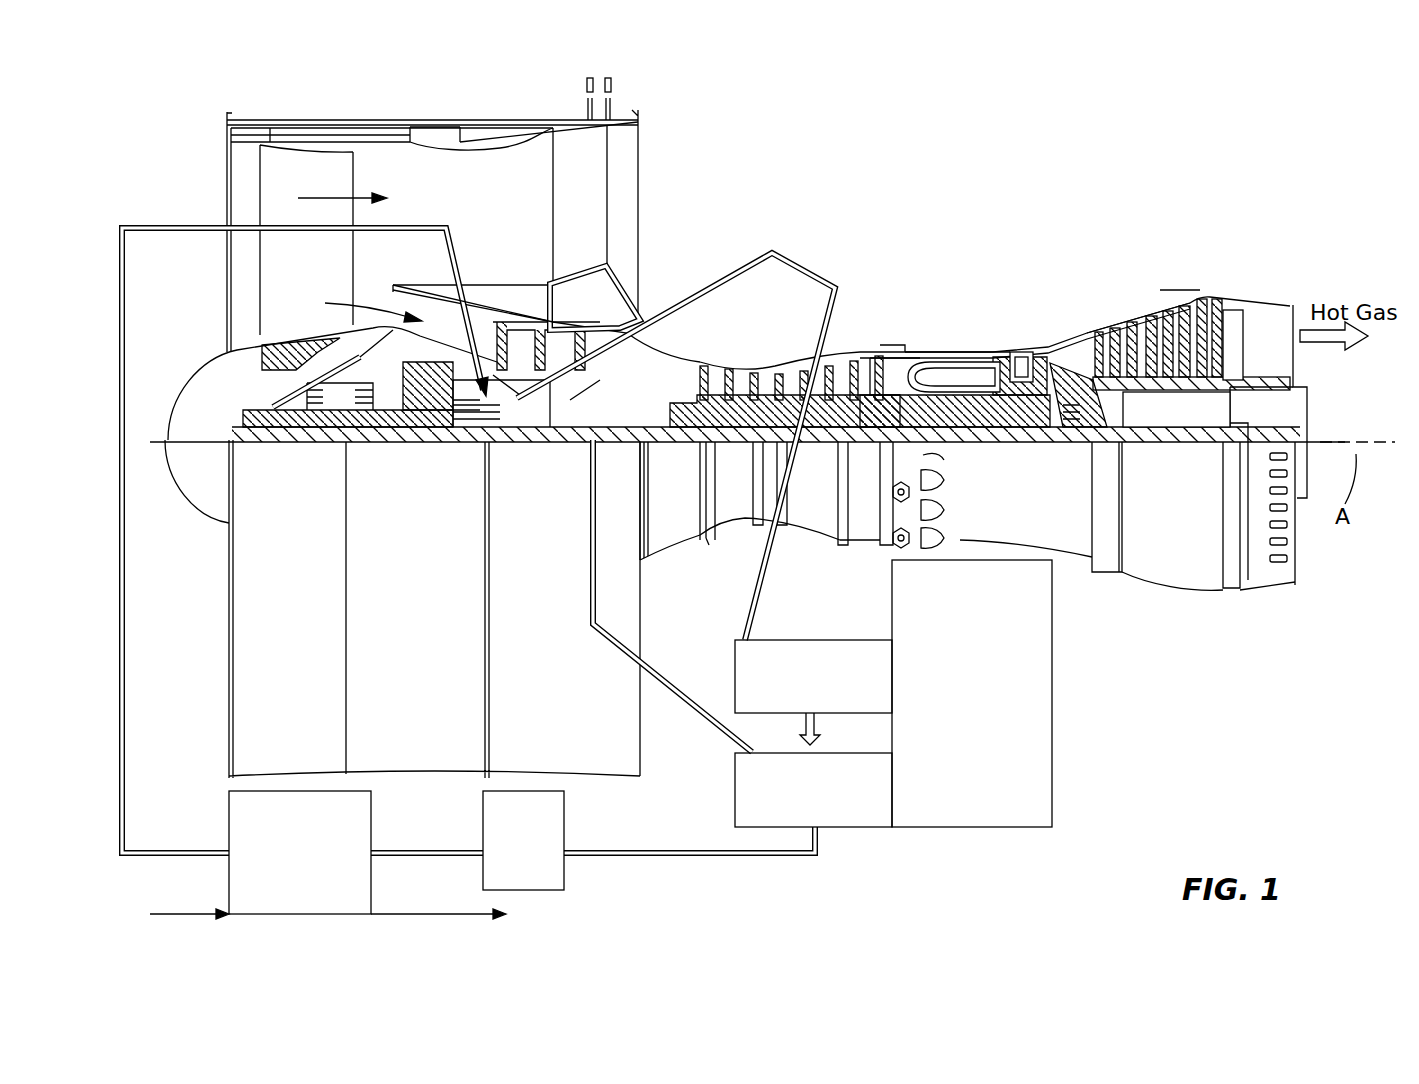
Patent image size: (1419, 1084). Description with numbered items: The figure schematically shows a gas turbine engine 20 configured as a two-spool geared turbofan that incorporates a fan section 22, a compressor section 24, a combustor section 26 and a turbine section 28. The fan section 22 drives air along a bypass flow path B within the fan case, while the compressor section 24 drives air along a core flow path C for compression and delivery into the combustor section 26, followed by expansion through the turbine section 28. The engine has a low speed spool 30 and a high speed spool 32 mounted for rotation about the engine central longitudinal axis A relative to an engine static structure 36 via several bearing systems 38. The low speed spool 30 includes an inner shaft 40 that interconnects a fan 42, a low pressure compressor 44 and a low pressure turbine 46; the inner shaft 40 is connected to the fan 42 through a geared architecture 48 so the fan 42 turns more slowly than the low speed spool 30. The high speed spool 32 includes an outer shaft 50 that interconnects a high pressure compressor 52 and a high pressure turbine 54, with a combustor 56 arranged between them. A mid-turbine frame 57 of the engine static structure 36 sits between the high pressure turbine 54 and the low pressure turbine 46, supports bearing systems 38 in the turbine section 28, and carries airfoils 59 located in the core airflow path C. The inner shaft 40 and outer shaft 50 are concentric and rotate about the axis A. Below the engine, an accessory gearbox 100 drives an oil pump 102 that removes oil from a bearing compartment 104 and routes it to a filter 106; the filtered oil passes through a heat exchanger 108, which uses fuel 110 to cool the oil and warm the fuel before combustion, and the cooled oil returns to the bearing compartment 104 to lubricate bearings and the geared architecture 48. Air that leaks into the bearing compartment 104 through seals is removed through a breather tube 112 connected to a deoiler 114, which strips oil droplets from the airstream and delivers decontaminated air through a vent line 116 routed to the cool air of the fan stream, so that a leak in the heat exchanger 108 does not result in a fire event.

The gas turbine engine 20 is at (1000, 168).
The fan section 22 is at (358, 118).
The compressor section 24 is at (687, 348).
The combustor section 26 is at (1003, 308).
The turbine section 28 is at (1135, 280).
The low speed spool 30 is at (815, 446).
The high speed spool 32 is at (868, 348).
The engine static structure 36 is at (865, 544).
The bearing systems 38 is at (573, 448).
The inner shaft 40 is at (676, 450).
The fan 42 is at (313, 277).
The low pressure compressor 44 is at (582, 300).
The low pressure turbine 46 is at (1160, 300).
The geared architecture 48 is at (437, 448).
The outer shaft 50 is at (950, 448).
The high pressure compressor 52 is at (787, 362).
The high pressure turbine 54 is at (1022, 350).
The combustor 56 is at (945, 375).
The mid-turbine frame 57 is at (1074, 326).
The airfoils 59 is at (1096, 388).
The accessory gearbox 100 is at (1018, 755).
The oil pump 102 is at (862, 830).
The bearing compartment 104 is at (468, 450).
The filter 106 is at (563, 875).
The heat exchanger 108 is at (345, 808).
The fuel 110 is at (185, 905).
The breather tube 112 is at (808, 258).
The deoiler 114 is at (875, 670).
The vent line 116 is at (825, 735).